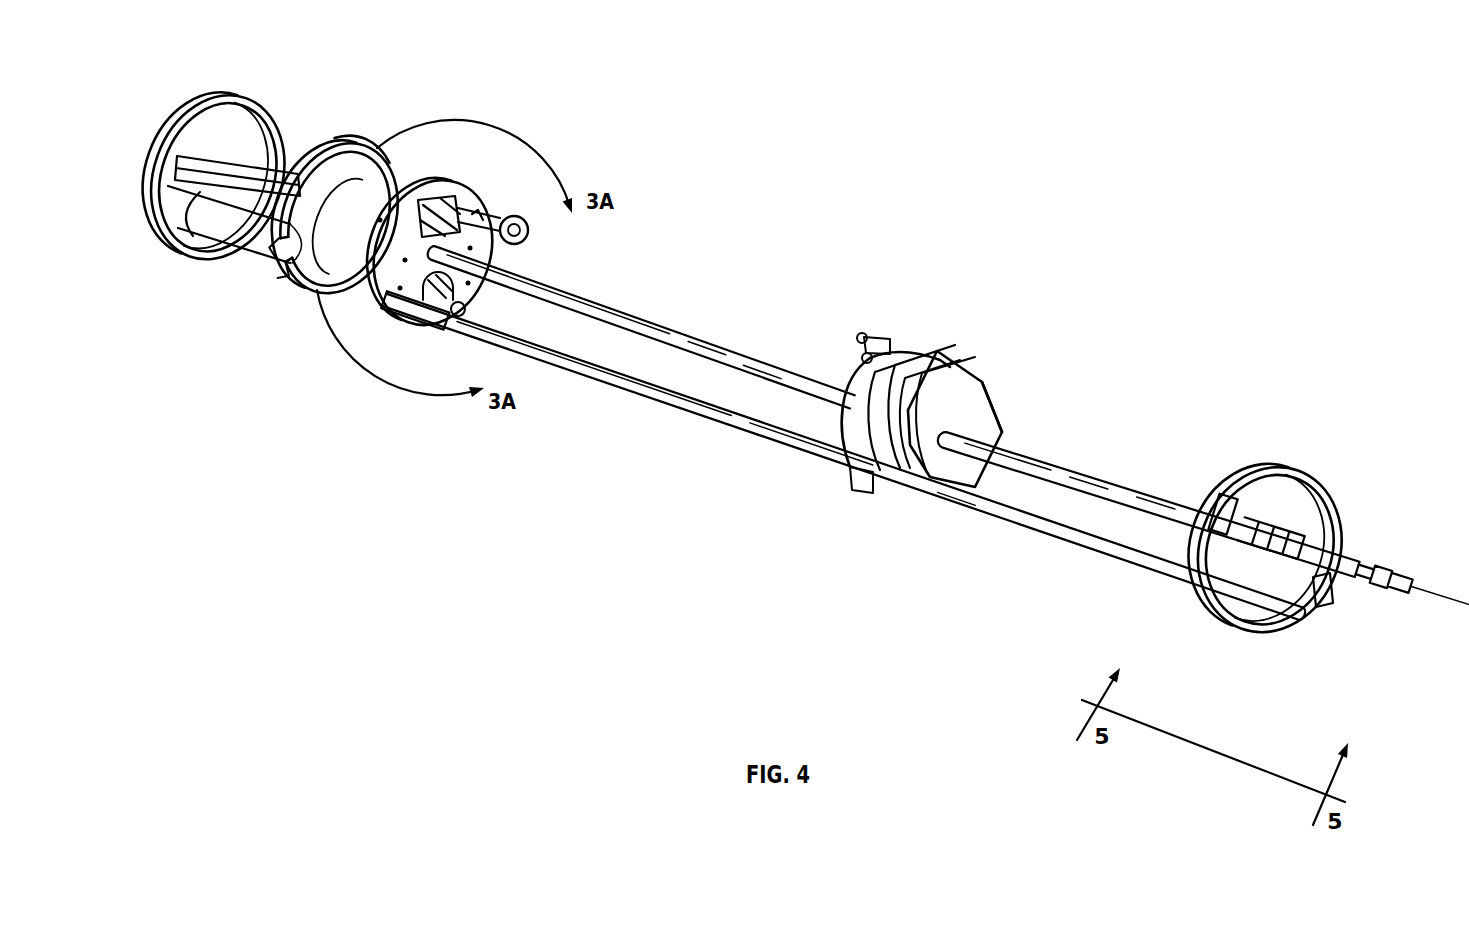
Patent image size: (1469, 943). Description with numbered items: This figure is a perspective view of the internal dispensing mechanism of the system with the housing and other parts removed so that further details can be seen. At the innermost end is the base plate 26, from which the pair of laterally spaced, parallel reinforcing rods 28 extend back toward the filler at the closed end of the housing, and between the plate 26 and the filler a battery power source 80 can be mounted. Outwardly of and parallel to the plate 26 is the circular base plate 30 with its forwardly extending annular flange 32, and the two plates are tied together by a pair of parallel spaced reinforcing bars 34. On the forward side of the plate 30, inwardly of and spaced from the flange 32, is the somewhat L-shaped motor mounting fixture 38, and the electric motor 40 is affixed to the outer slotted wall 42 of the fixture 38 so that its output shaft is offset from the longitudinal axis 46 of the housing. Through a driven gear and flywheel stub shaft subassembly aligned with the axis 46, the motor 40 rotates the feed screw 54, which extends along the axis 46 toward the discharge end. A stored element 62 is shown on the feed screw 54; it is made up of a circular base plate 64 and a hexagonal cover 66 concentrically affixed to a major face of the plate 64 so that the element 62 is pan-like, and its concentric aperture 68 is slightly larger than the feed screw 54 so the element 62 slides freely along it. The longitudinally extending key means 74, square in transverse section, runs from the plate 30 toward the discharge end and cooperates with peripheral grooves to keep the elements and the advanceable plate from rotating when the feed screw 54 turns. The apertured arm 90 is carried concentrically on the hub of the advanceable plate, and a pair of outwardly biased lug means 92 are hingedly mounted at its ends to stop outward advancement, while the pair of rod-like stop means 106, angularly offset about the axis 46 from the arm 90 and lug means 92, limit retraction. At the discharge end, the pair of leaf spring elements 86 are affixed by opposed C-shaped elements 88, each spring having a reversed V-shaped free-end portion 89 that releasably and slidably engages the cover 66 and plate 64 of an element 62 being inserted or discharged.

The base plate 26 is at (350, 143).
The reinforcing rods 28 is at (162, 218).
The base plate 30 is at (373, 288).
The annular flange 32 is at (433, 180).
The reinforcing bars 34 is at (287, 267).
The motor mounting fixture 38 is at (290, 277).
The electric motor 40 is at (327, 302).
The outer slotted wall 42 is at (410, 185).
The longitudinal axis 46 is at (583, 297).
The feed screw 54 is at (688, 333).
The stored element 62 is at (932, 478).
The base plate 64 is at (963, 363).
The cover 66 is at (970, 413).
The concentric aperture 68 is at (1002, 432).
The key means 74 is at (600, 385).
The battery power source 80 is at (230, 248).
The leaf spring elements 86 is at (1260, 528).
The C-shaped elements 88 is at (1277, 468).
The free-end portion 89 is at (1385, 587).
The apertured arm 90 is at (897, 347).
The lug means 92 is at (864, 333).
The stop means 106 is at (495, 212).